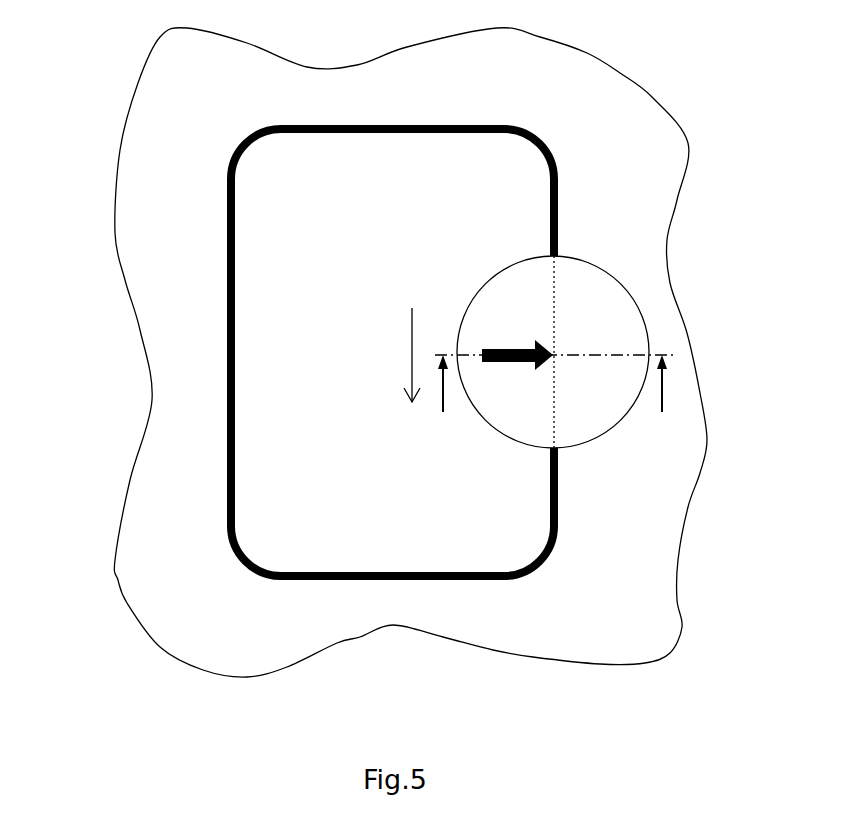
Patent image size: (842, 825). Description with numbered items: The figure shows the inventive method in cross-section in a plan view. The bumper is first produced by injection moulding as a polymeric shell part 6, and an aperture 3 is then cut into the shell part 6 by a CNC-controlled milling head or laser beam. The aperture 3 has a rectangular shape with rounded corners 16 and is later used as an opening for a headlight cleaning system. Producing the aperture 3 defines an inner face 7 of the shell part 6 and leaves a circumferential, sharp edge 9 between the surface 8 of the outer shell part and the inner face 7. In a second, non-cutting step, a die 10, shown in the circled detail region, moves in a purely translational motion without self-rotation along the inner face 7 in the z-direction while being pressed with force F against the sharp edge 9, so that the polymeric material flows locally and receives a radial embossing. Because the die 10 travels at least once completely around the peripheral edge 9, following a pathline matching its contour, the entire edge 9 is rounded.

The aperture 3 is at (343, 450).
The shell part 6 is at (618, 621).
The inner face 7 is at (388, 163).
The surface of outer shell part 8 is at (183, 237).
The edge 9 is at (231, 259).
The die 10 is at (582, 293).
The rounded corners 16 is at (245, 145).